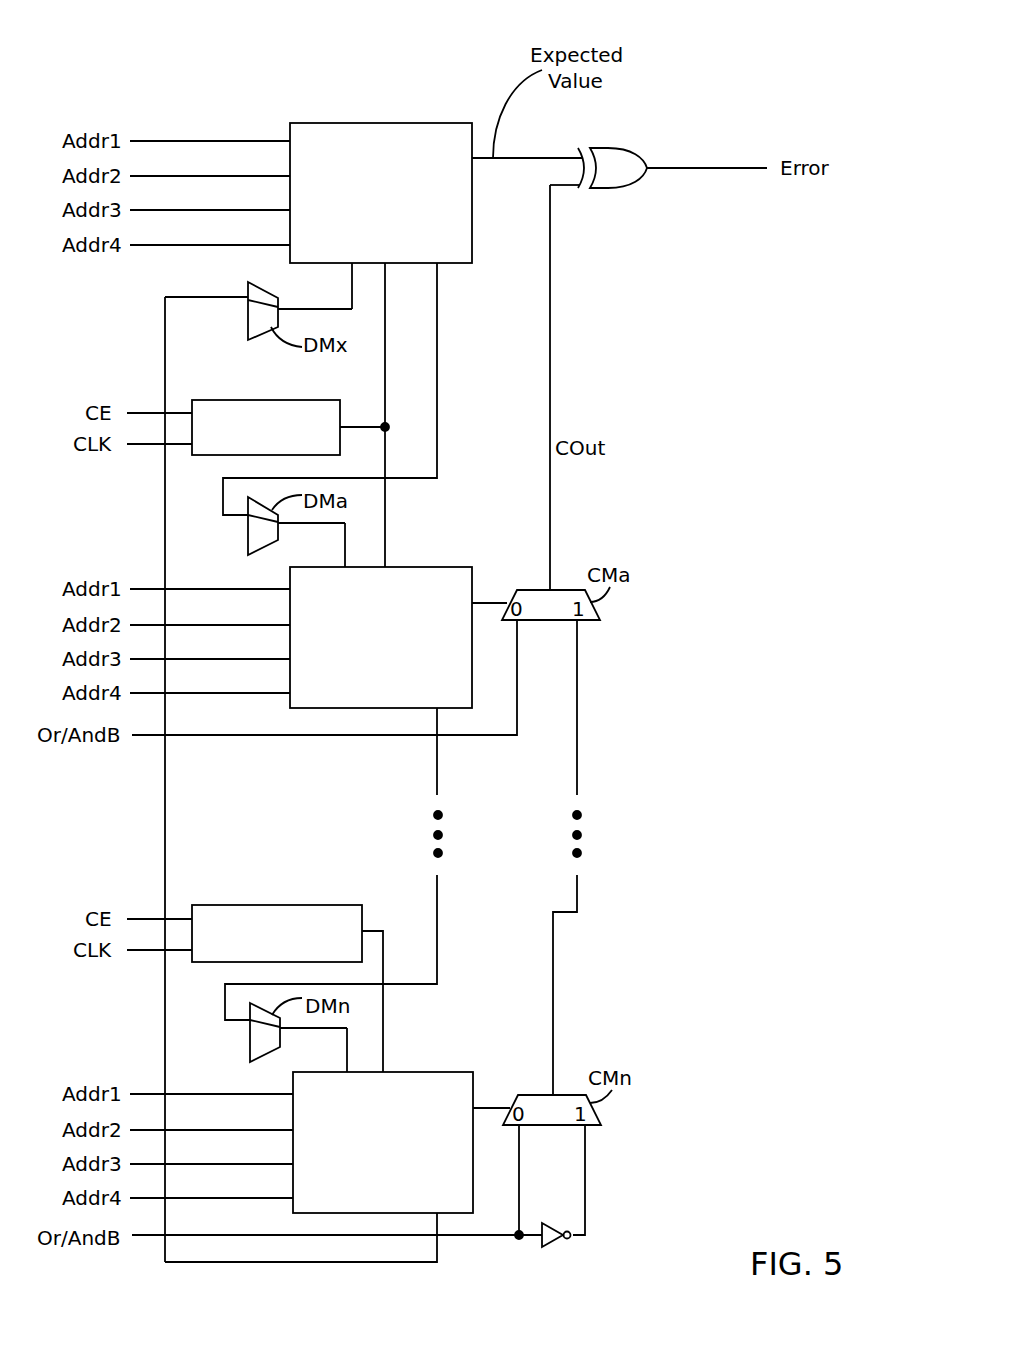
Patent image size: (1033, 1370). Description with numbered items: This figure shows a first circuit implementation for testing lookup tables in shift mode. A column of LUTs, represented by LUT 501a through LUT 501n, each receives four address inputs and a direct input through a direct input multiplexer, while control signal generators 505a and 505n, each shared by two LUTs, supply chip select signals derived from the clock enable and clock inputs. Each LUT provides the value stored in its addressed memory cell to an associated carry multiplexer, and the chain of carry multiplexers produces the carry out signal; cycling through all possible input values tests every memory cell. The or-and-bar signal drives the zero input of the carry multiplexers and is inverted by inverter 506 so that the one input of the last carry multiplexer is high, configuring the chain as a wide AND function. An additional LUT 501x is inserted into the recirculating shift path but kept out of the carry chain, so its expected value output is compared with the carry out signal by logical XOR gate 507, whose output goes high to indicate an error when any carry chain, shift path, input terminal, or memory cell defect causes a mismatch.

The LUT 501x is at (398, 215).
The LUT 501a is at (398, 658).
The LUT 501n is at (400, 1163).
The control signal generator 505a is at (333, 438).
The control signal generator 505n is at (345, 943).
The inverter 506 is at (555, 1238).
The logical XOR gate 507 is at (623, 146).